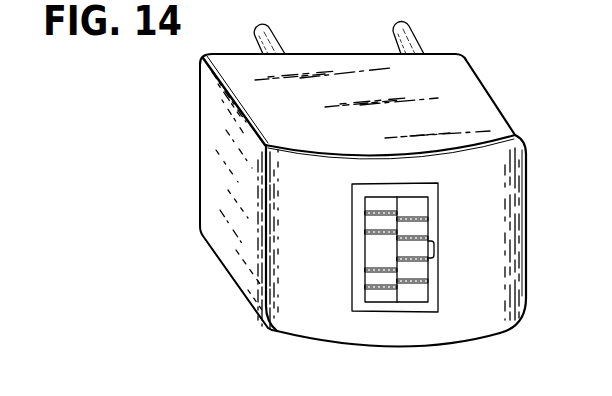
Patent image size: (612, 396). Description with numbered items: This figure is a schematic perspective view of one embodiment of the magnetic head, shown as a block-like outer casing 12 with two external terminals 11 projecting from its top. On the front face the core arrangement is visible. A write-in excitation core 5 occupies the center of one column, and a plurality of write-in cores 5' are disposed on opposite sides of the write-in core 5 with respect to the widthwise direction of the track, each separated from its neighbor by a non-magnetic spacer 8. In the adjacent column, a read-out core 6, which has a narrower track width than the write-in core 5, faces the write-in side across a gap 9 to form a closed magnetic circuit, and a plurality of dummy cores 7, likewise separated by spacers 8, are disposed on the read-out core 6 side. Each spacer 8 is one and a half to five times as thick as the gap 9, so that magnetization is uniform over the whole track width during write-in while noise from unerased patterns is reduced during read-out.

The write-in excitation core 5 is at (346, 254).
The write-in cores 5' is at (343, 245).
The read-out core 6 is at (435, 252).
The dummy cores 7 is at (415, 205).
The non-magnetic spacer 8 is at (368, 213).
The gap 9 is at (400, 292).
The external terminals 11 is at (258, 42).
The outer casing 12 is at (290, 308).